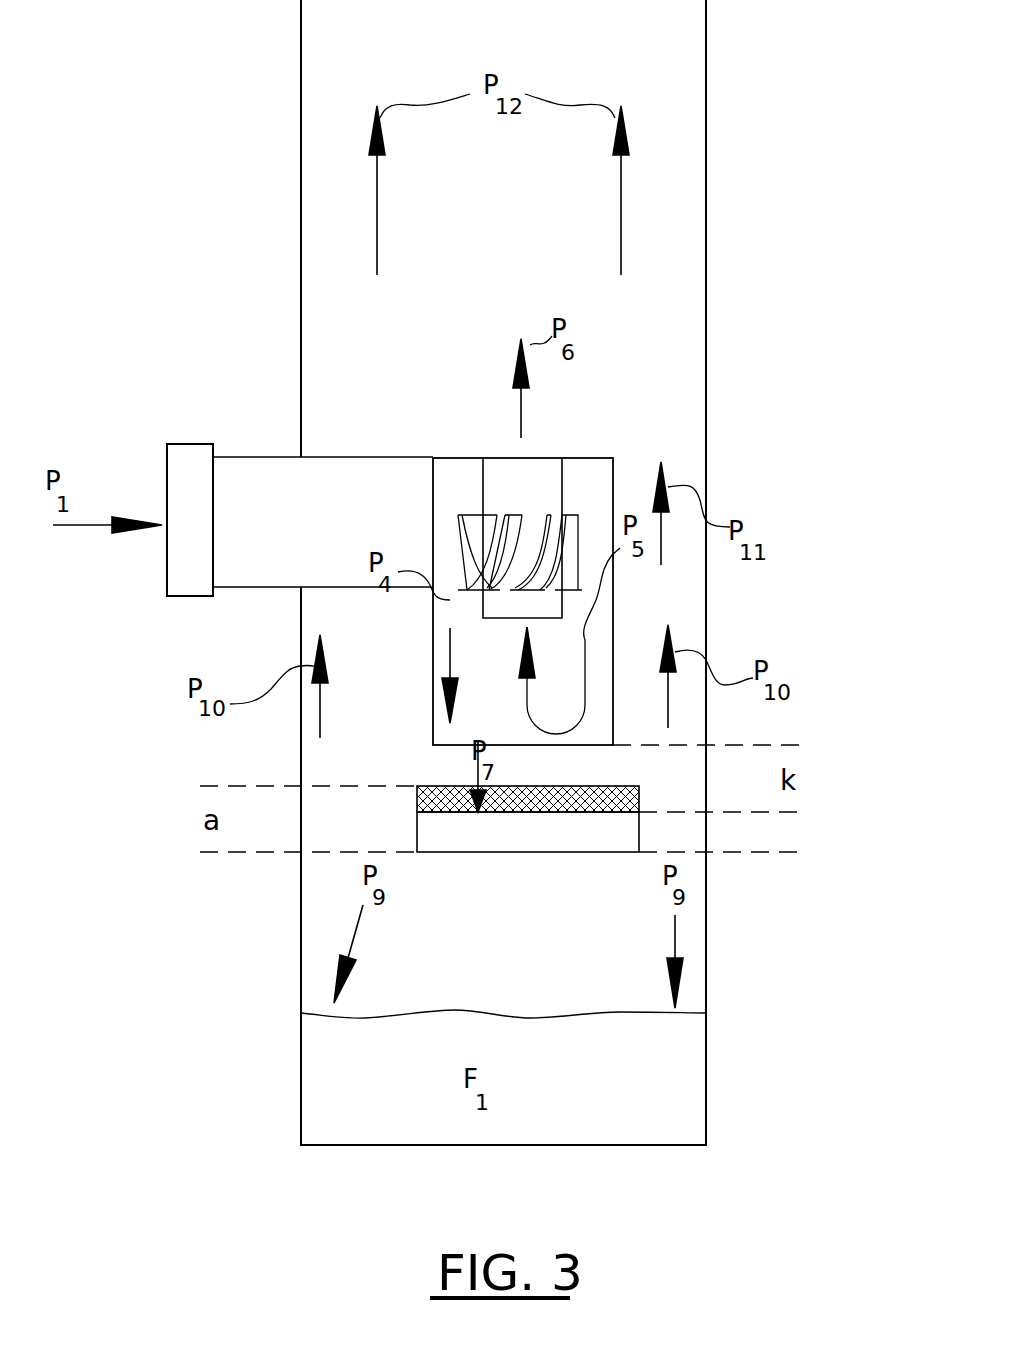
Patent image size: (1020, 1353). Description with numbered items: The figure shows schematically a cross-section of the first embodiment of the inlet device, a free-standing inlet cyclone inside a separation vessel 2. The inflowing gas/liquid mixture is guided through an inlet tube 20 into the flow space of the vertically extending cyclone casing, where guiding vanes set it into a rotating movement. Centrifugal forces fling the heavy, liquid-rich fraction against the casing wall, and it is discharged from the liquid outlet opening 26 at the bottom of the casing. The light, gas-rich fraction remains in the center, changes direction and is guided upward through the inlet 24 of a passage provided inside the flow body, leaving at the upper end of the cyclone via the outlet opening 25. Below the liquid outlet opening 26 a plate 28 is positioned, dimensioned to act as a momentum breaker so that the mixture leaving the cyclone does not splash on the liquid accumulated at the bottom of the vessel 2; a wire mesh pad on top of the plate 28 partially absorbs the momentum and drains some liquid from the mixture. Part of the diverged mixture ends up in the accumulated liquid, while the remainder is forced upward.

The vessel 2 is at (706, 425).
The inlet tube 20 is at (262, 470).
The inlet 24 is at (498, 618).
The outlet opening 25 is at (540, 456).
The liquid outlet opening 26 is at (562, 745).
The plate 28 is at (547, 852).